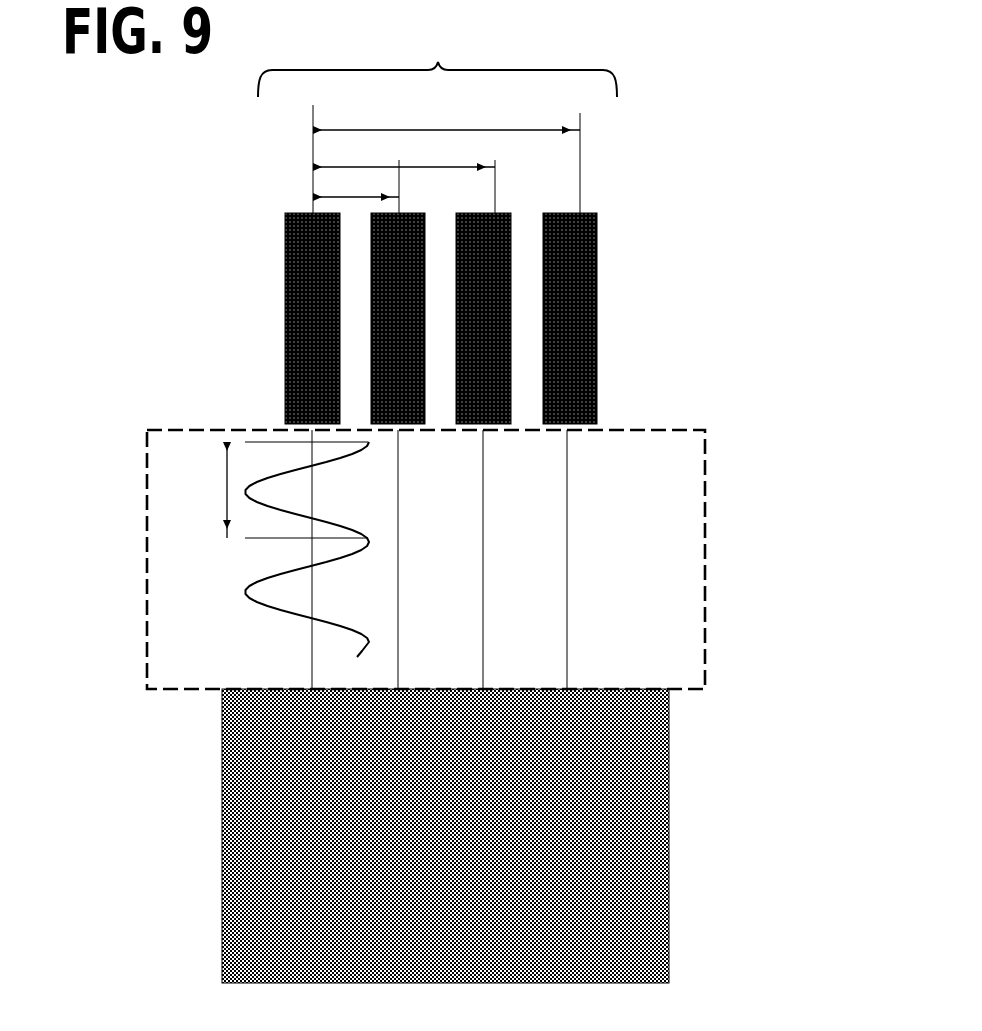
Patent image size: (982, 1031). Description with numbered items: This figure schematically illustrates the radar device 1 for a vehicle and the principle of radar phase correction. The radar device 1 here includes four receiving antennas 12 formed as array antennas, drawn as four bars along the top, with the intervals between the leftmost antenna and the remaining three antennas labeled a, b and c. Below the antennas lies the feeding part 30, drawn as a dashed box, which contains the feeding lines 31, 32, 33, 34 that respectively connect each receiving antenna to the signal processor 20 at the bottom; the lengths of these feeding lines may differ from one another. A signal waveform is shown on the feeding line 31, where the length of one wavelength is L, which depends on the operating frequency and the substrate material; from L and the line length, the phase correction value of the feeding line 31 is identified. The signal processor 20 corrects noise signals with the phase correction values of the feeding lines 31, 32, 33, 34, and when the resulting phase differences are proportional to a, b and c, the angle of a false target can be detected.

The radar device 1 is at (688, 128).
The receiving antennas 12 is at (438, 61).
The signal processor 20 is at (669, 836).
The feeding part 30 is at (660, 428).
The feeding line 31 is at (312, 655).
The feeding line 32 is at (398, 668).
The feeding line 33 is at (483, 488).
The feeding line 34 is at (567, 590).